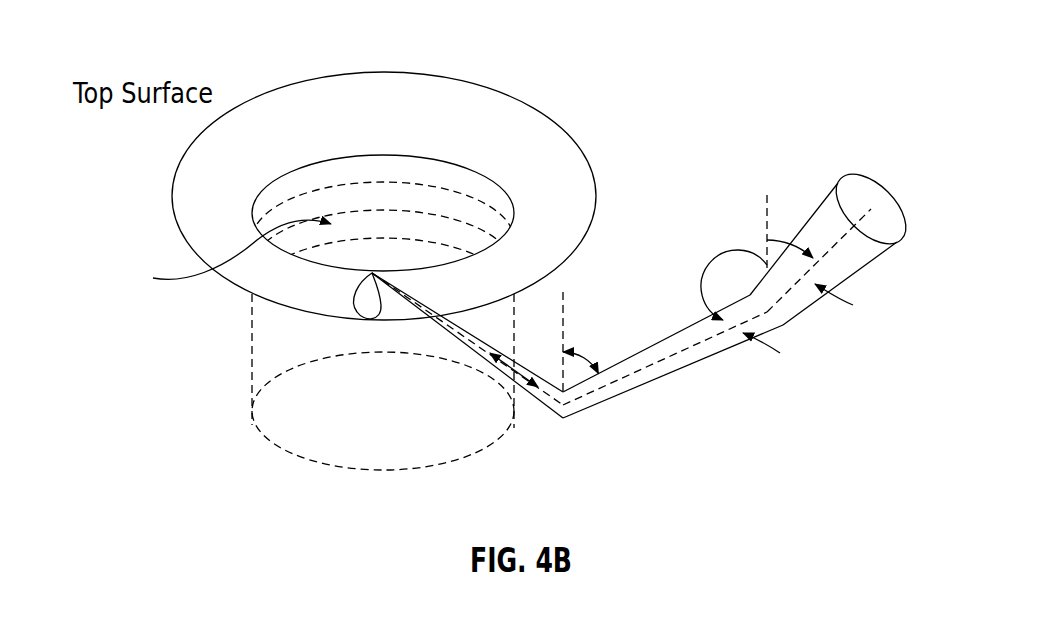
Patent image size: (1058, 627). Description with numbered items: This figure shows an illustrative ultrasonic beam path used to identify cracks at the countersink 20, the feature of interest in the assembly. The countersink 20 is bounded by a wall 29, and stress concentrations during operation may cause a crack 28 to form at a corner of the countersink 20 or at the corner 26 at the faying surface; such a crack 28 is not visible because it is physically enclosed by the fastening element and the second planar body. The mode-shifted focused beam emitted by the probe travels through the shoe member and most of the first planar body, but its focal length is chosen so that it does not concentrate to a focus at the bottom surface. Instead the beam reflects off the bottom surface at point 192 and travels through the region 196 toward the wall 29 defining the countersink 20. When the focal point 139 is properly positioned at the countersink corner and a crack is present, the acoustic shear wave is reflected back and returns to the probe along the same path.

The countersink 20 is at (395, 251).
The wall 29 is at (460, 98).
The corner at a faying surface 26 is at (294, 167).
The crack 28 is at (551, 334).
The focal point 139 is at (371, 273).
The region 196 is at (547, 392).
The point 192 is at (564, 422).